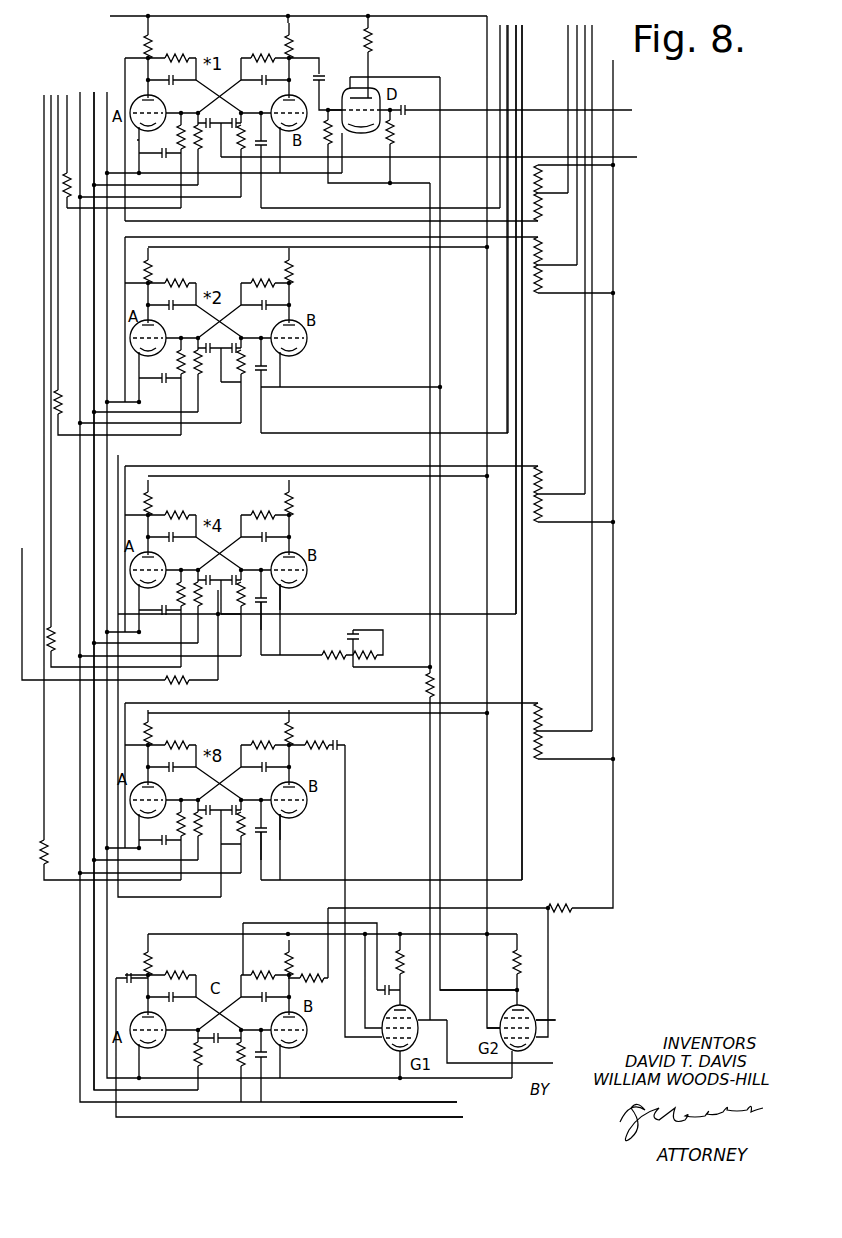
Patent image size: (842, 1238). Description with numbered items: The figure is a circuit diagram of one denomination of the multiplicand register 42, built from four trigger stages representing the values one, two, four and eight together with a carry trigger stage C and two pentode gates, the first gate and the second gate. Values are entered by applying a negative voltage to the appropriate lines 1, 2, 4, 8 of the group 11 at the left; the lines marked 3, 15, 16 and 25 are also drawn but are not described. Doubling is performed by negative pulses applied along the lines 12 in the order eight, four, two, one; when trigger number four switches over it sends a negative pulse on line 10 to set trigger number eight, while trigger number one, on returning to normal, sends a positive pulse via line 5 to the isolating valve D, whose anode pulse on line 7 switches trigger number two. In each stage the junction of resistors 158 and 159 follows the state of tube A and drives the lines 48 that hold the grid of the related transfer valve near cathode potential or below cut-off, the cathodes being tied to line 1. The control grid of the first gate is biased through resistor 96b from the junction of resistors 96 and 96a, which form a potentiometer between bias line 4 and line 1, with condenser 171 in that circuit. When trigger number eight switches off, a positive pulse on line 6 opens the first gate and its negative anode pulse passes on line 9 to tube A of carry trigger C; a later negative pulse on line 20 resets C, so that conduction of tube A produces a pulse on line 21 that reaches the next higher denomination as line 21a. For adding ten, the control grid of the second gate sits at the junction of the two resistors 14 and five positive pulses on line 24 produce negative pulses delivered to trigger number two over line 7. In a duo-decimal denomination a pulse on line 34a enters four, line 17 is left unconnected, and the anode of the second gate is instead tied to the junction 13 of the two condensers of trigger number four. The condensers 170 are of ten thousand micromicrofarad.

The multiplicand register denomination 42 is at (76, 46).
The entry lines group 11 is at (67, 92).
The line 1 is at (44, 103).
The line 2 is at (125, 19).
The bias line 4 is at (58, 143).
The line 8 is at (67, 163).
The control lead 3 is at (80, 92).
The line 5 is at (315, 74).
The line 7 is at (418, 77).
The doubling pulse lines 12 is at (524, 24).
The transfer valve grid lines 48 is at (594, 30).
The common lead 15 is at (621, 57).
The line 17 is at (635, 111).
The carry output line 21a is at (443, 149).
The resistor 158 is at (358, 462).
The resistor 159 is at (573, 463).
The condenser junction 13 is at (209, 482).
The condensers 170 is at (164, 156).
The line 10 is at (118, 464).
The line 34a is at (259, 354).
The condenser 171 is at (353, 630).
The resistor 96a is at (326, 667).
The resistor 96 is at (365, 672).
The resistor 96b is at (429, 686).
The line 6 is at (345, 854).
The line 9 is at (291, 917).
The lead 16 is at (426, 908).
The resistors 14 is at (558, 908).
The line 24 is at (558, 1025).
The output lead 25 is at (554, 1067).
The line 20 is at (452, 1105).
The line 21 is at (460, 1120).